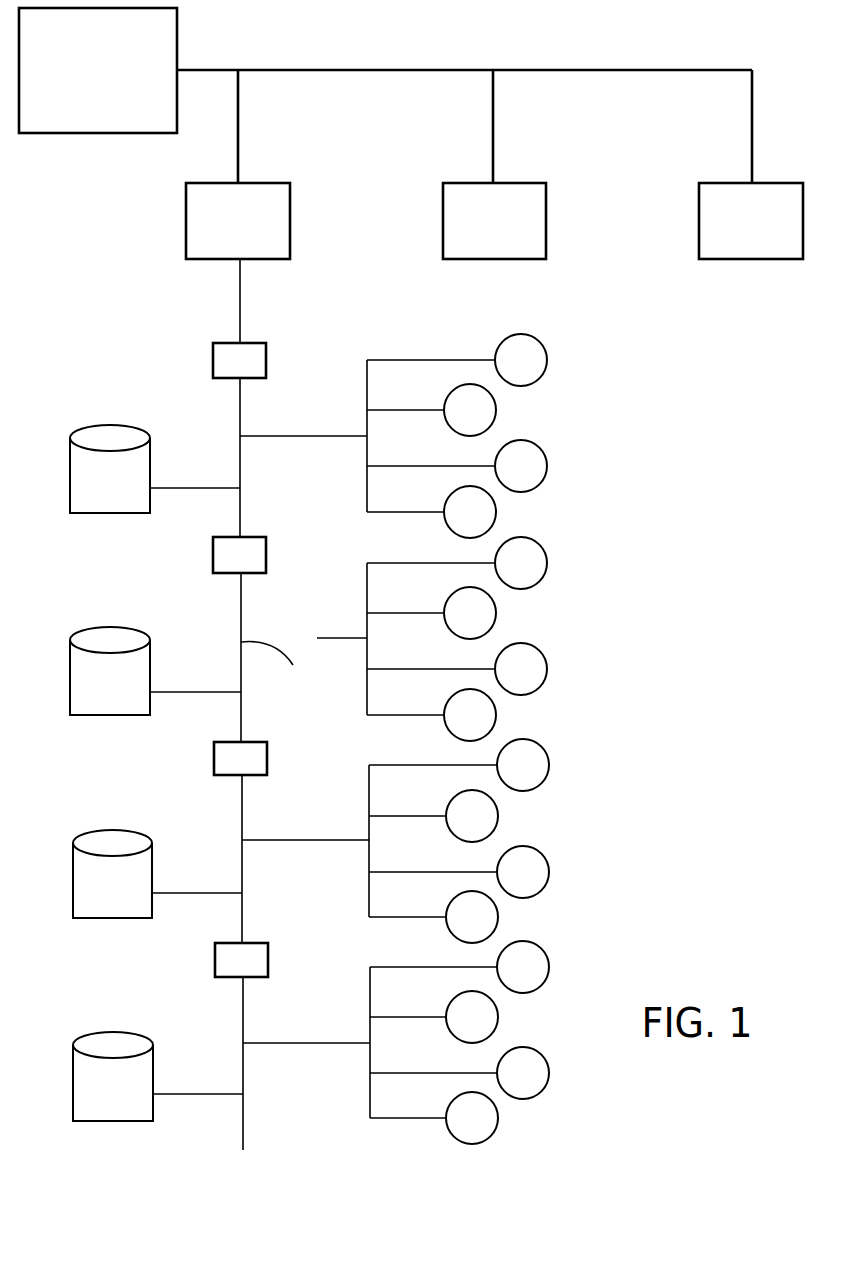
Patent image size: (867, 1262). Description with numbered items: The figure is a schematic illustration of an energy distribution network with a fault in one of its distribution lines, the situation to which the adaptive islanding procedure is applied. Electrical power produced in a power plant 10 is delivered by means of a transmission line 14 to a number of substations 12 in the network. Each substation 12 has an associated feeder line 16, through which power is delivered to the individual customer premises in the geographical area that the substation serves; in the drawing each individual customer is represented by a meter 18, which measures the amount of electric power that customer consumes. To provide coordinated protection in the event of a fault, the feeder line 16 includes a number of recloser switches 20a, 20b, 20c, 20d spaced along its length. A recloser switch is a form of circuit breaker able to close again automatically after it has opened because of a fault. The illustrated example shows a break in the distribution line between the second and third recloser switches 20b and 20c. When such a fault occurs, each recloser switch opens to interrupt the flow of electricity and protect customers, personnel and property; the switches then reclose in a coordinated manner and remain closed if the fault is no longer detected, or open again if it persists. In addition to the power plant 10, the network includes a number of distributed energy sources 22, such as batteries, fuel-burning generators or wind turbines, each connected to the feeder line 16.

The power plant 10 is at (177, 30).
The substation 12 is at (267, 183).
The transmission line 14 is at (373, 70).
The feeder line 16 is at (240, 300).
The meter 18 is at (539, 342).
The recloser switch 20a is at (266, 360).
The recloser switch 20b is at (266, 555).
The recloser switch 20c is at (267, 758).
The recloser switch 20d is at (268, 960).
The distributed energy source 22 is at (150, 453).